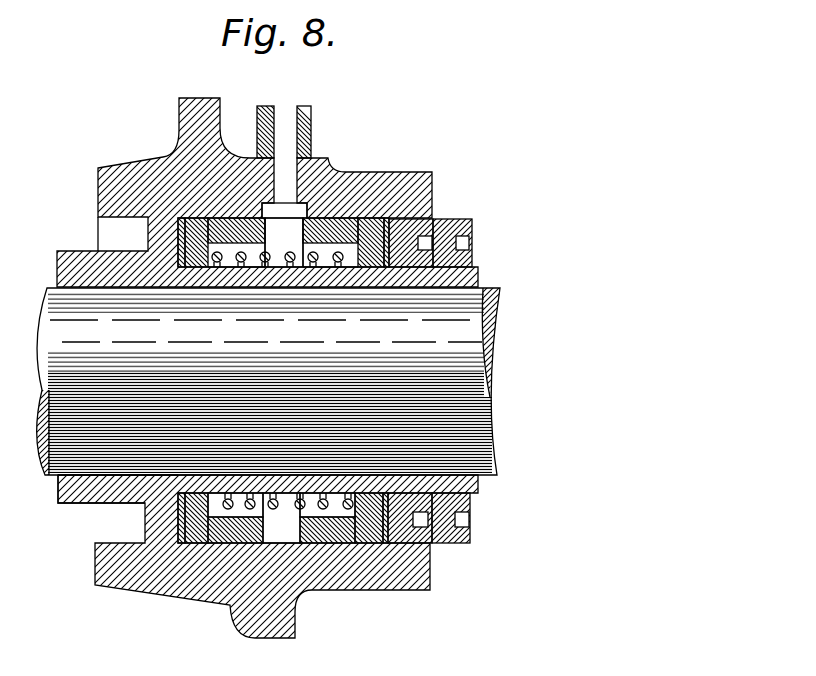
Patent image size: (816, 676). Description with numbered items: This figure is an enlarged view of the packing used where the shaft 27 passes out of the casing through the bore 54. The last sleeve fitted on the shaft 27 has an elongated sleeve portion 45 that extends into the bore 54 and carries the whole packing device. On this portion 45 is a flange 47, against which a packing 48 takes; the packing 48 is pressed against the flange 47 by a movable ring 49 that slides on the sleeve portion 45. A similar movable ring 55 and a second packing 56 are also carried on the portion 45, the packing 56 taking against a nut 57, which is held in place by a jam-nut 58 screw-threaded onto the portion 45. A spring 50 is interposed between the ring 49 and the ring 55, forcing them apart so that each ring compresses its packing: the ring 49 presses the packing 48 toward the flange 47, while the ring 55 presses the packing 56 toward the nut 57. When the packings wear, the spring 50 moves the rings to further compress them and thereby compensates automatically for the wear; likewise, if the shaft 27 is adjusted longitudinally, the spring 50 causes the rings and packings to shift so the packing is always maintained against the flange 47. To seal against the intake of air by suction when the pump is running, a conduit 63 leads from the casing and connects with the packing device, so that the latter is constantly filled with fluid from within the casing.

The shaft 27 is at (496, 347).
The elongated sleeve portion 45 is at (78, 493).
The flange 47 is at (156, 536).
The packing 48 is at (196, 536).
The movable ring 49 is at (244, 545).
The spring 50 is at (299, 500).
The bore 54 is at (112, 235).
The movable ring 55 is at (318, 541).
The packing 56 is at (358, 541).
The nut 57 is at (436, 220).
The jam-nut 58 is at (447, 232).
The conduit 63 is at (311, 128).